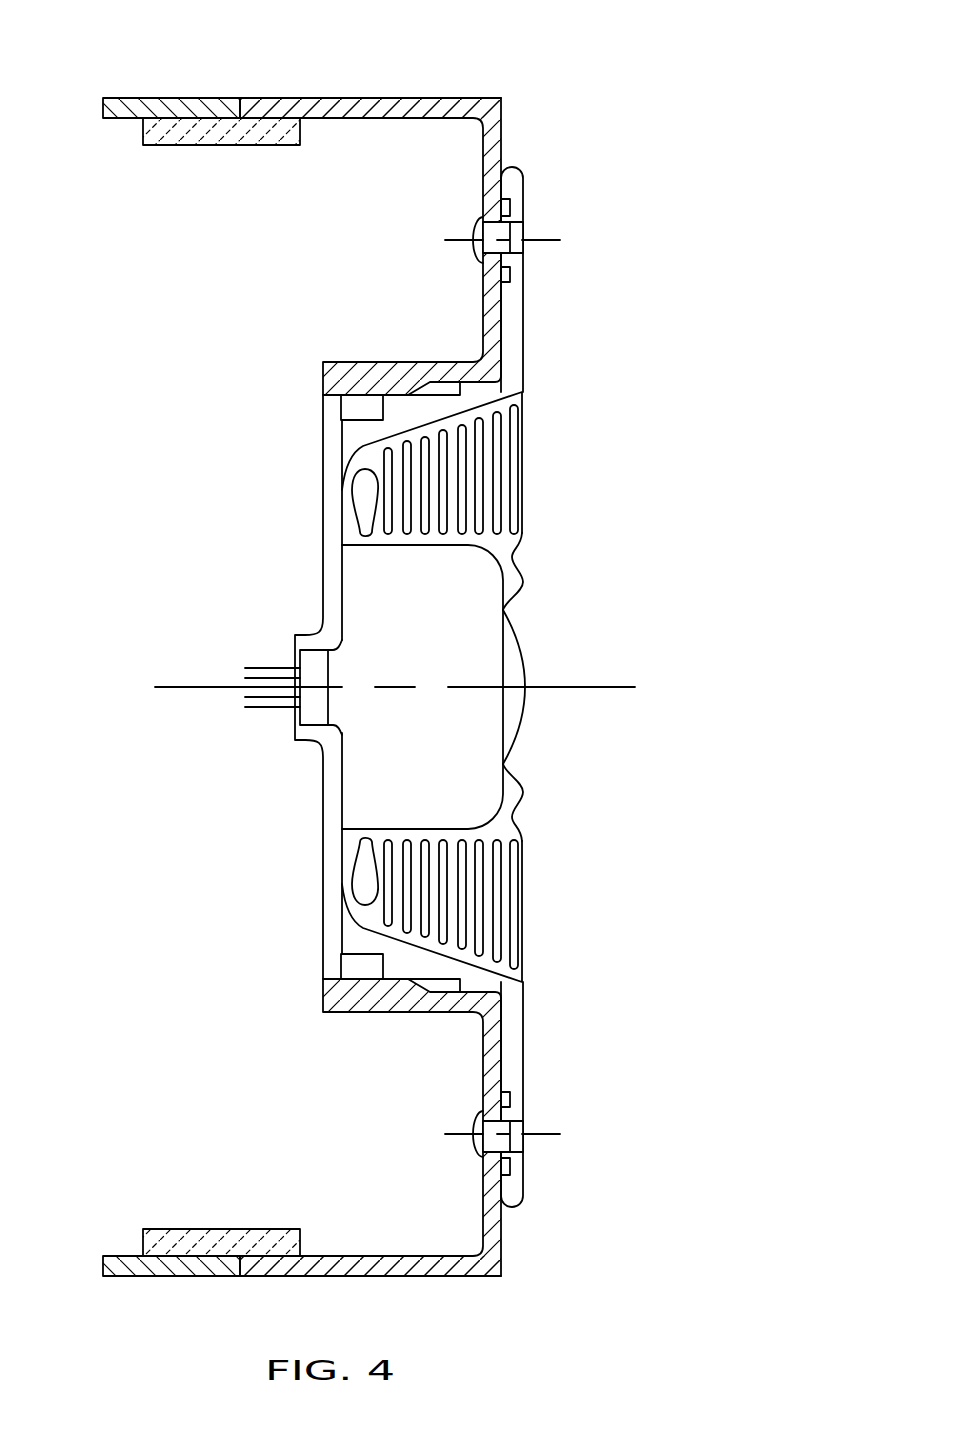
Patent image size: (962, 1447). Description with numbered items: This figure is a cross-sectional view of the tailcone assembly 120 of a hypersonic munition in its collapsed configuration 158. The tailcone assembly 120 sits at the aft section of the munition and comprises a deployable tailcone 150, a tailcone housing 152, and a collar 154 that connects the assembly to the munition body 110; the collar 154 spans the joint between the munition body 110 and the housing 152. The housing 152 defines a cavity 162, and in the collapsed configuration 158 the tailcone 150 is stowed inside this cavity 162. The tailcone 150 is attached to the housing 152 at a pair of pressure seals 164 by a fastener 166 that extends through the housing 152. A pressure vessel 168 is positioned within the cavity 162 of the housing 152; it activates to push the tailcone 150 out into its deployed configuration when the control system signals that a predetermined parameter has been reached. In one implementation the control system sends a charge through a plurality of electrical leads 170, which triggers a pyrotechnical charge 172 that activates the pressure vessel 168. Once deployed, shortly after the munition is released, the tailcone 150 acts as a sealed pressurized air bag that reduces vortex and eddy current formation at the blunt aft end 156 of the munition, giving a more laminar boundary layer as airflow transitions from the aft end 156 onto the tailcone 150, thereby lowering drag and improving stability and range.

The munition body 110 is at (120, 97).
The tailcone assembly 120 is at (526, 72).
The deployable tailcone 150 is at (535, 460).
The tailcone housing 152 is at (426, 90).
The collar 154 is at (166, 147).
The blunt aft end 156 is at (515, 108).
The collapsed configuration 158 is at (605, 870).
The cavity 162 is at (337, 945).
The pressure seals 164 is at (508, 258).
The fastener 166 is at (480, 253).
The pressure vessel 168 is at (513, 562).
The electrical leads 170 is at (248, 645).
The pyrotechnical charge 172 is at (330, 710).